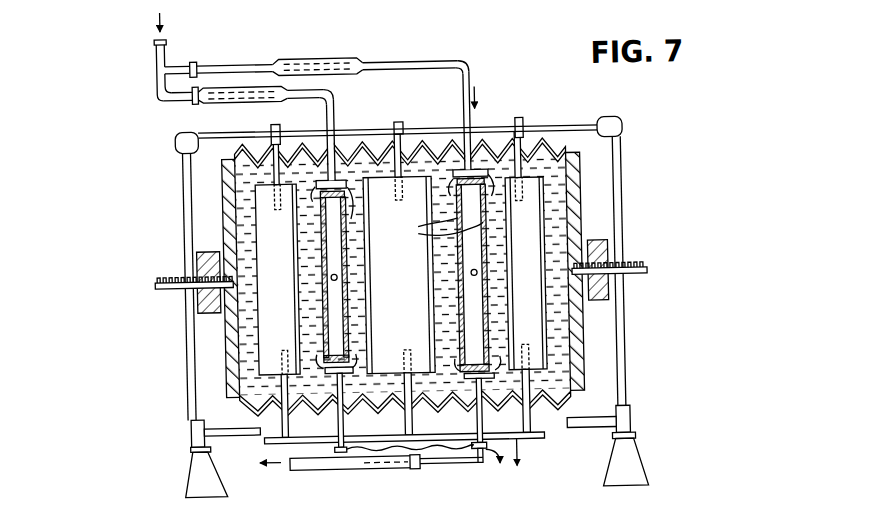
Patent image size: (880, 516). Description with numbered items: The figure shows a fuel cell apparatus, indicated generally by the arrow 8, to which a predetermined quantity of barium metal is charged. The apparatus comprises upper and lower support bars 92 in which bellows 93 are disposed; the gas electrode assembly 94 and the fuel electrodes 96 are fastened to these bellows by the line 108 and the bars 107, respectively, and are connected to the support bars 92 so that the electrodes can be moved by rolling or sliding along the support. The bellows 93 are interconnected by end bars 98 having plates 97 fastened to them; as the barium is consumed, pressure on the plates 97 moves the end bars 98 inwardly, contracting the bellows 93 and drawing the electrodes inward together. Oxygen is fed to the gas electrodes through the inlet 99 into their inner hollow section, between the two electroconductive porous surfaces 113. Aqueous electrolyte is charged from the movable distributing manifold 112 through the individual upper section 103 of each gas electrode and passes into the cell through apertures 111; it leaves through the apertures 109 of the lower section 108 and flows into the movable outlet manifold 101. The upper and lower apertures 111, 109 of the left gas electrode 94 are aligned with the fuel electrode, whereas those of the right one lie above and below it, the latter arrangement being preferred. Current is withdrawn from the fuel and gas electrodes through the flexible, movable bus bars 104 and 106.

The section view indicator arrow 8 is at (121, 240).
The support bars 92 is at (564, 128).
The bellows 93 is at (431, 140).
The gas electrode assembly 94 is at (348, 183).
The fuel electrodes 96 is at (293, 263).
The plates 97 is at (212, 309).
The end bars 98 is at (224, 205).
The inlet 99 is at (330, 277).
The outlet manifold 101 is at (331, 468).
The upper section 103 is at (337, 103).
The bus bar 104 is at (516, 450).
The bus bar 106 is at (493, 462).
The bars 107 is at (276, 122).
The lower section 108 is at (474, 418).
The apertures 109 is at (460, 372).
The apertures 111 is at (459, 174).
The distributing manifold 112 is at (160, 46).
The electroconductive porous surfaces 113 is at (434, 230).